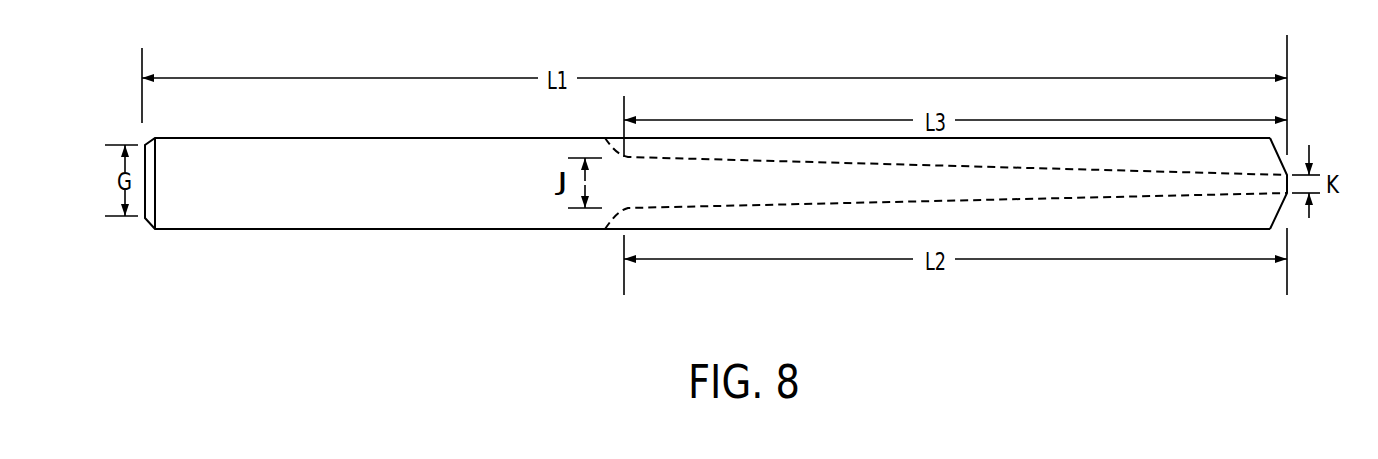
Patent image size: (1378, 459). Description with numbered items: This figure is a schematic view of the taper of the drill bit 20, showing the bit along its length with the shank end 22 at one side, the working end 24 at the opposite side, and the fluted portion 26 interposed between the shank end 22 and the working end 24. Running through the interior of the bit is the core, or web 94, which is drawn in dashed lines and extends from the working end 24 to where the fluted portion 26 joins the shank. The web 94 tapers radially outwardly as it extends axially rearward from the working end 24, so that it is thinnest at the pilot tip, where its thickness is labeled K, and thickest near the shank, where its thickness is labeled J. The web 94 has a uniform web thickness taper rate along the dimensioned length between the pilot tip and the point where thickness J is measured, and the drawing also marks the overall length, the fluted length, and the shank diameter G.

The drill bit 20 is at (612, 97).
The shank end 22 is at (388, 135).
The working end 24 is at (1292, 140).
The fluted portion 26 is at (878, 138).
The web 94 is at (815, 190).